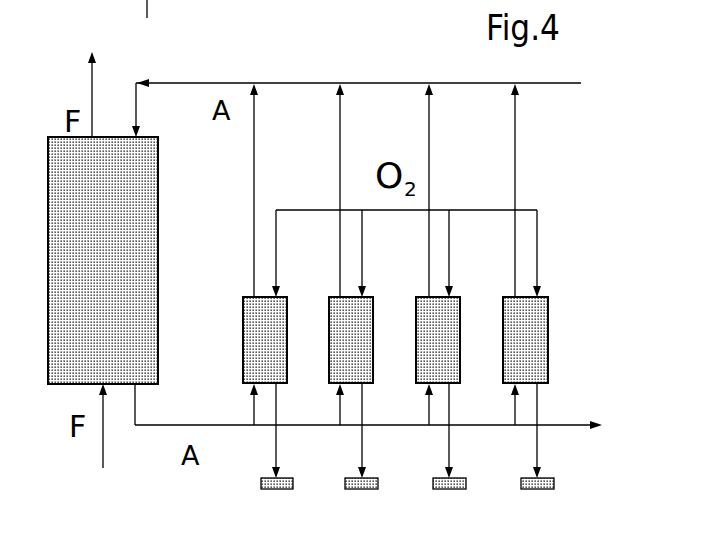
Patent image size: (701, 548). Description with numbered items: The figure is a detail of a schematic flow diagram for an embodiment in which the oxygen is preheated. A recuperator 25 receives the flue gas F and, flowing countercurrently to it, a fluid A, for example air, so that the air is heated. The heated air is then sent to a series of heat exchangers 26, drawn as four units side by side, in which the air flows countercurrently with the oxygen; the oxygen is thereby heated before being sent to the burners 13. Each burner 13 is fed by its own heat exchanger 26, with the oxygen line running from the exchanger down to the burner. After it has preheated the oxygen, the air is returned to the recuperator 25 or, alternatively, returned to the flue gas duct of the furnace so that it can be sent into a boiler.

The recuperator 25 is at (117, 275).
The heat exchanger 26 is at (280, 353).
The burner 13 is at (544, 483).